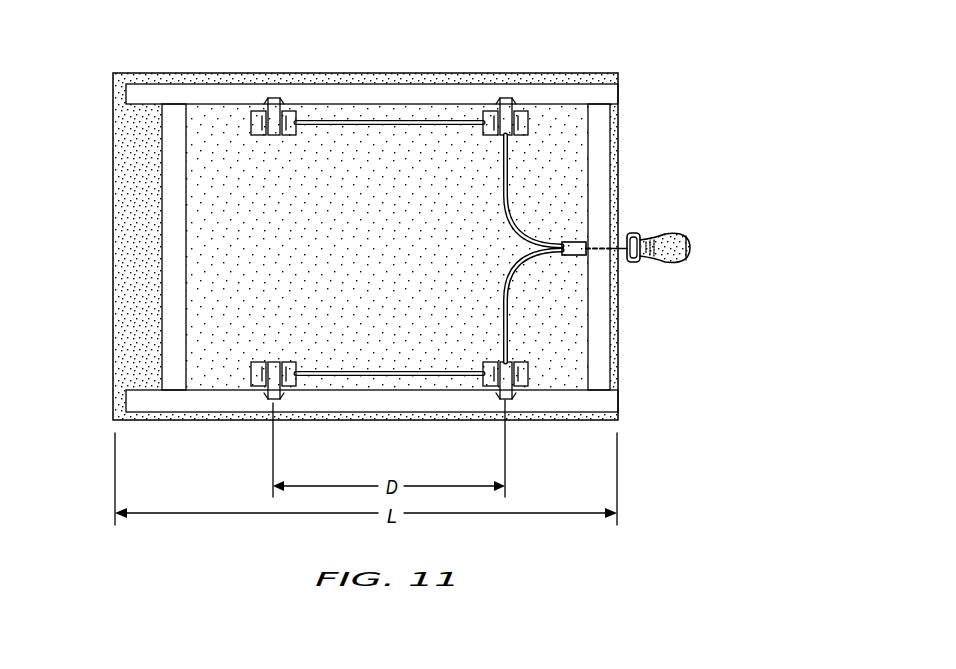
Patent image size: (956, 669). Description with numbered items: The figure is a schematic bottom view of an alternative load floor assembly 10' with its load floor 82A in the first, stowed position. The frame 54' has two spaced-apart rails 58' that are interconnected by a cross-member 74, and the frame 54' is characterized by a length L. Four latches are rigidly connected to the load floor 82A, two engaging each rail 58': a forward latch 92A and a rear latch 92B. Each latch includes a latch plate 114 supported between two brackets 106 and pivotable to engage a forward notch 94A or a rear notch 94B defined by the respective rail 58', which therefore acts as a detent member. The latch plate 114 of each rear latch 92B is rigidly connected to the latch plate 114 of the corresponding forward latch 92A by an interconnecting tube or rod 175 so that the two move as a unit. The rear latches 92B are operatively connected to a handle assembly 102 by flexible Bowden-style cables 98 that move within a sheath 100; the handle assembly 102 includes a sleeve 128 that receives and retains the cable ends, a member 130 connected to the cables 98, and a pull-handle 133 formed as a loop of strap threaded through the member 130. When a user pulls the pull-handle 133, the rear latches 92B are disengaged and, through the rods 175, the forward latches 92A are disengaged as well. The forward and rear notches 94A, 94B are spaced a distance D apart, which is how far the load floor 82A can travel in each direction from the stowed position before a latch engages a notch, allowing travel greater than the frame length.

The alternative load floor assembly 10' is at (82, 171).
The frame 54' is at (106, 120).
The rail 58' is at (372, 248).
The cross-member 74 is at (190, 227).
The load floor 82A is at (113, 285).
The forward latch 92A is at (273, 160).
The rear latch 92B is at (484, 162).
The forward notch 94A is at (401, 248).
The rear notch 94B is at (500, 99).
The cable 98 is at (487, 248).
The sheath 100 is at (512, 225).
The handle assembly 102 is at (572, 244).
The bracket 106 is at (528, 118).
The latch plate 114 is at (283, 99).
The sleeve 128 is at (576, 258).
The member 130 is at (633, 232).
The pull-handle 133 is at (692, 247).
The interconnecting rod 175 is at (378, 130).